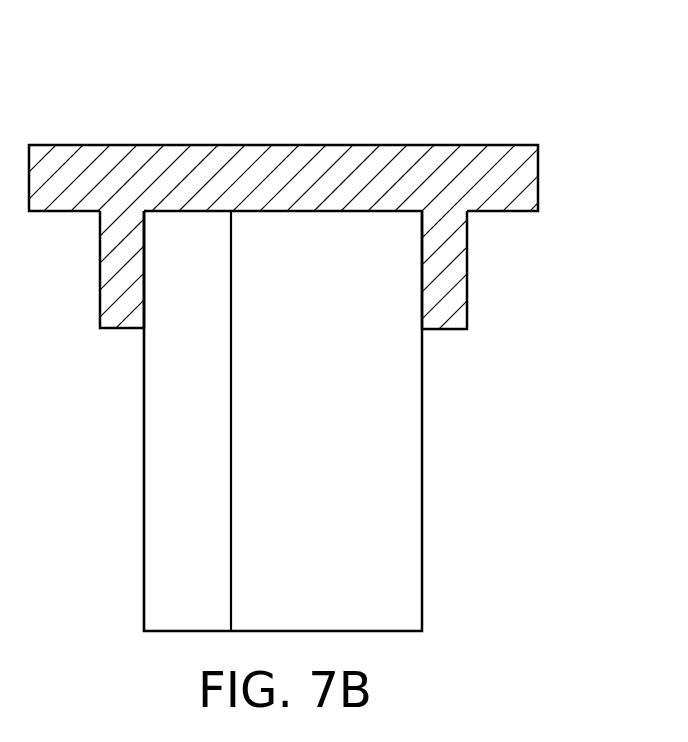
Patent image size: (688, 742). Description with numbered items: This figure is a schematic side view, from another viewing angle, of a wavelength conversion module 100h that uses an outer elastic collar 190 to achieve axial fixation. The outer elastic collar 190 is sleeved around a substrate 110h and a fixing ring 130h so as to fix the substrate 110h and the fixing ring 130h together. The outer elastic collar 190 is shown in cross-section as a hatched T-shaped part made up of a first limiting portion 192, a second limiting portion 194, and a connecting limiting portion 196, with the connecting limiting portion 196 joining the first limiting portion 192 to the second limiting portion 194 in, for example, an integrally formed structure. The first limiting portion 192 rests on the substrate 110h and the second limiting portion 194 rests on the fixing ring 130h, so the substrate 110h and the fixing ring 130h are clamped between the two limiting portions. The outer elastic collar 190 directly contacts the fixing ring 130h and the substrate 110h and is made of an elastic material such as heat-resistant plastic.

The wavelength conversion module 100h is at (344, 346).
The substrate 110h is at (387, 497).
The fixing ring 130h is at (178, 497).
The outer elastic collar 190 is at (344, 185).
The first limiting portion 192 is at (450, 285).
The second limiting portion 194 is at (127, 275).
The connecting limiting portion 196 is at (292, 177).